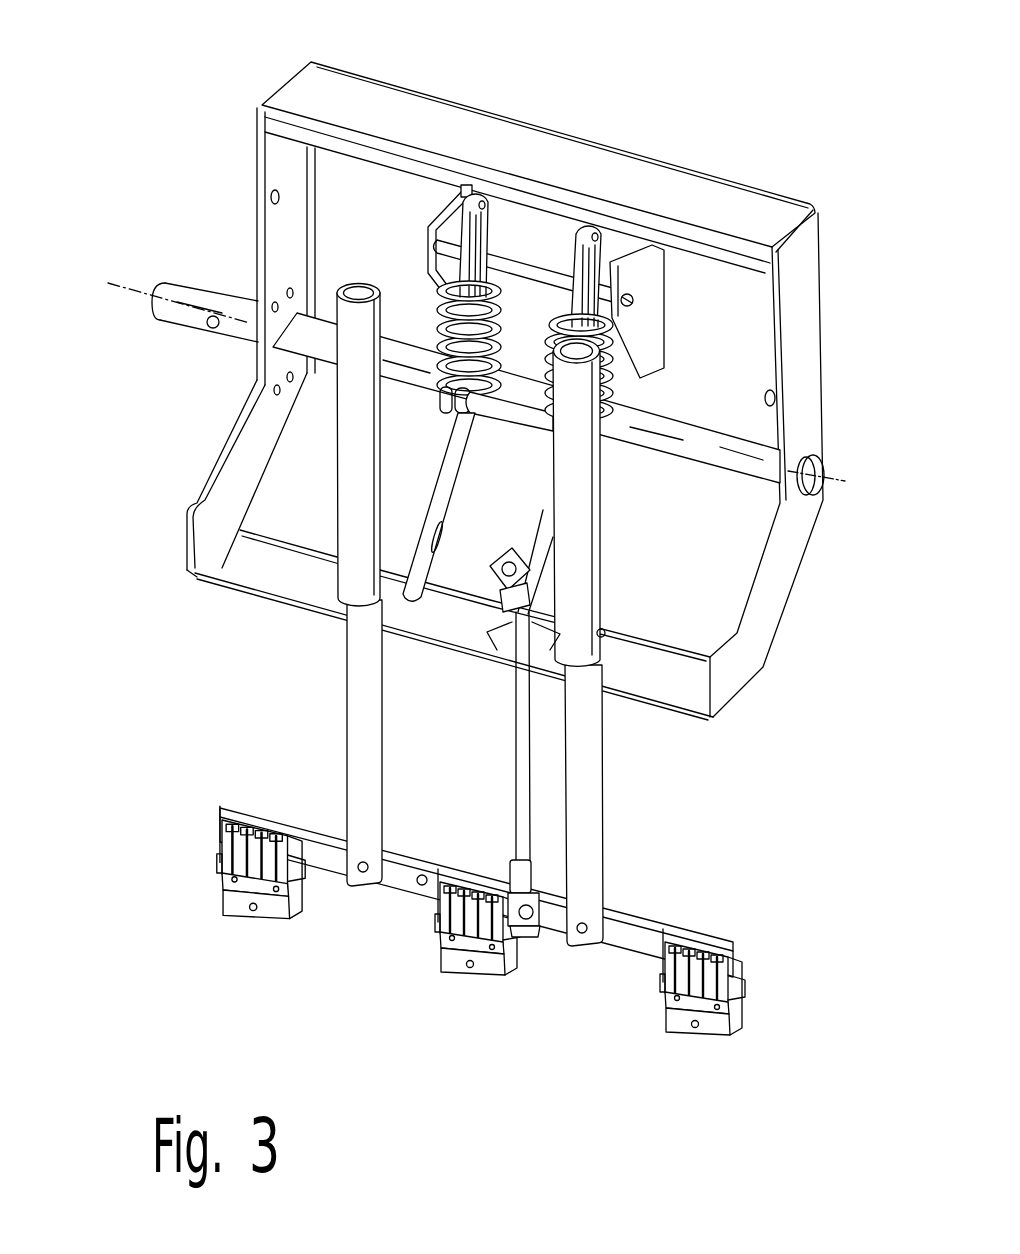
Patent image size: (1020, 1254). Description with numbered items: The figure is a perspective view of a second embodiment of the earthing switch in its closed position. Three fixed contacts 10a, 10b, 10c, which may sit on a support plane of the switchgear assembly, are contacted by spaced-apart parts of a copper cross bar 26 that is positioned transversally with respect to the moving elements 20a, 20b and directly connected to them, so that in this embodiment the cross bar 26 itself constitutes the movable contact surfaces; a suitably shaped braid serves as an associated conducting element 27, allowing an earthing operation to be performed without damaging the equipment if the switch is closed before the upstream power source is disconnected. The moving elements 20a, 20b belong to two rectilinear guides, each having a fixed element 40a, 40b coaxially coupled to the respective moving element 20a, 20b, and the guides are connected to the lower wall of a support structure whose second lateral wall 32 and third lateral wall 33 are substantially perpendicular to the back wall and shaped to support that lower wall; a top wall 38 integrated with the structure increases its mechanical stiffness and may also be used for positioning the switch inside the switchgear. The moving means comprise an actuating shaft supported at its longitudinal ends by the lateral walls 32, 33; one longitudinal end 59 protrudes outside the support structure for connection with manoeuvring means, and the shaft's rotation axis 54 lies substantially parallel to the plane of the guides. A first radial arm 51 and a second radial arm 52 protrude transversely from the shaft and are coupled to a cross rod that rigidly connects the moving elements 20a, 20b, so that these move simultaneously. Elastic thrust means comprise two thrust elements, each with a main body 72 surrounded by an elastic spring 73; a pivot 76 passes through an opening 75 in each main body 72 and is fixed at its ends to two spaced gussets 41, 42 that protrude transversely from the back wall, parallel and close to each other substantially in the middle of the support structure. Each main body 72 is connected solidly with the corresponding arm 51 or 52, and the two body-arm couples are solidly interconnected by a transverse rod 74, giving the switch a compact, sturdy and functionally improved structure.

The fixed contact 10a is at (227, 902).
The fixed contact 10b is at (450, 960).
The fixed contact 10c is at (668, 1020).
The moving element 20a is at (360, 712).
The moving element 20b is at (587, 790).
The cross bar 26 is at (303, 840).
The conducting element 27 is at (520, 770).
The second lateral wall 32 is at (203, 543).
The third lateral wall 33 is at (783, 573).
The top wall 38 is at (567, 157).
The fixed element 40a is at (262, 445).
The fixed element 40b is at (587, 523).
The gusset 41 is at (427, 237).
The gusset 42 is at (650, 270).
The first radial arm 51 is at (478, 438).
The second radial arm 52 is at (613, 447).
The rotation axis 54 is at (129, 298).
The longitudinal end of the actuating shaft 59 is at (165, 292).
The main body 72 is at (463, 190).
The elastic spring 73 is at (438, 318).
The transverse rod 74 is at (528, 415).
The opening 75 is at (602, 260).
The pivot 76 is at (500, 267).